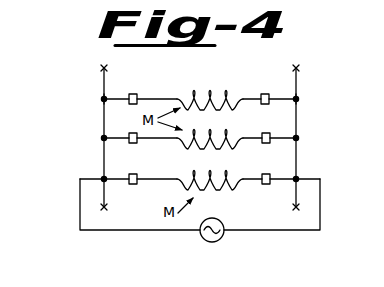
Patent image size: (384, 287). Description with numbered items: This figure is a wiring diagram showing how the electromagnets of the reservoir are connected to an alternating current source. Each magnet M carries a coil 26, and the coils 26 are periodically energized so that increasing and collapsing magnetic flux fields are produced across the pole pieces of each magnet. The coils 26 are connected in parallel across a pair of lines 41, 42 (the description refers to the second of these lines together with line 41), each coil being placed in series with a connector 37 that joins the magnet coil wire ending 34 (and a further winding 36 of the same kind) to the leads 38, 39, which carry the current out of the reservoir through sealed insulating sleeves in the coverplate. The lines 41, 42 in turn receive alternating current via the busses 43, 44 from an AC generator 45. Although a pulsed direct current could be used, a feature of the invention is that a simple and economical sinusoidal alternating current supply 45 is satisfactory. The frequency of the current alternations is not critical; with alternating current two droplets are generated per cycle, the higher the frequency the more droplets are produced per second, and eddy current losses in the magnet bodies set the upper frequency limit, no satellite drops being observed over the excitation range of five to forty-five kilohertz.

The coil 26 is at (210, 88).
The magnet coil wire ending 34 is at (262, 97).
The motor winding 36 is at (177, 98).
The connector 37 is at (131, 94).
The lead 38 is at (287, 98).
The lead 39 is at (112, 98).
The line 41 is at (298, 117).
The supply line 42 is at (104, 118).
The buss 43 is at (320, 190).
The buss 44 is at (80, 206).
The AC generator 45 is at (203, 239).